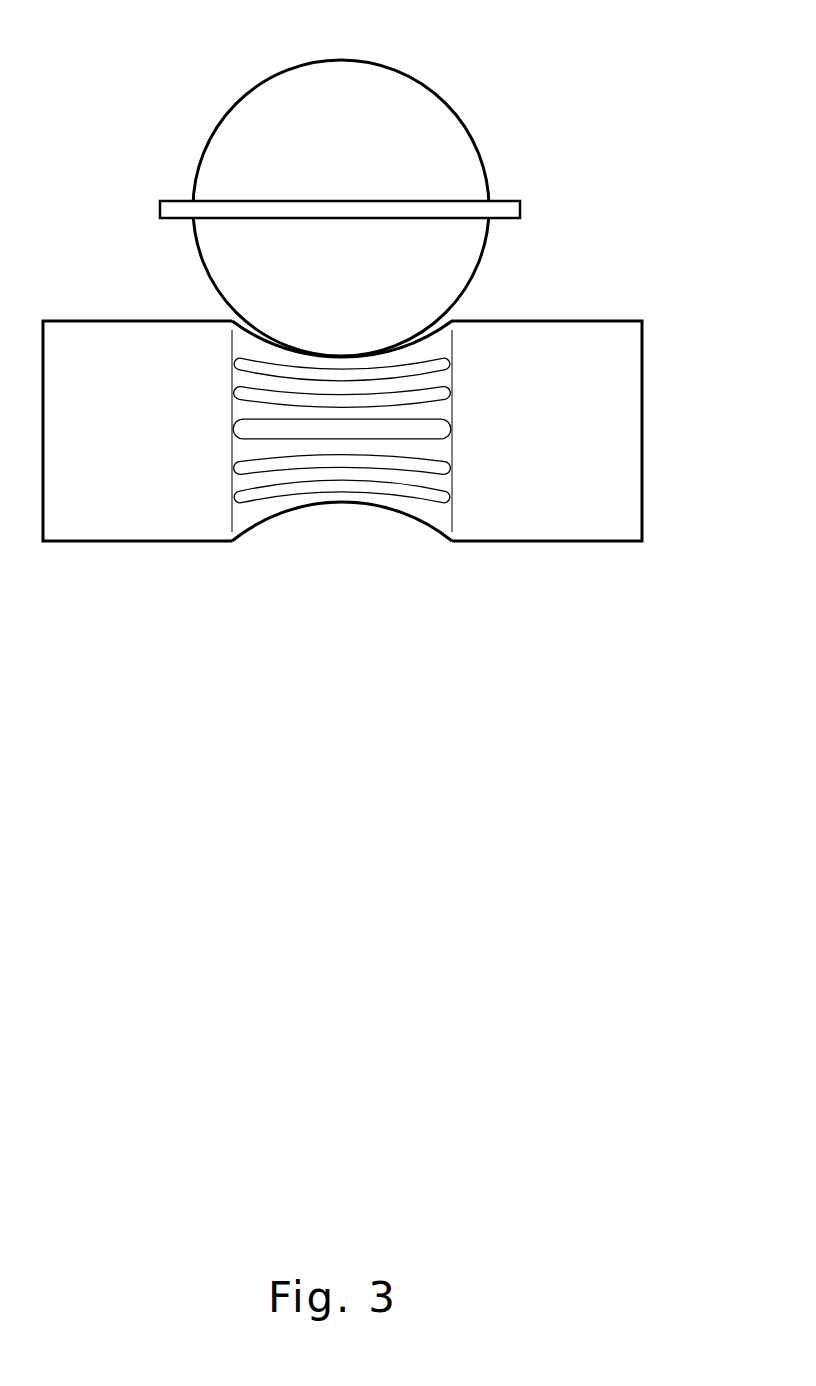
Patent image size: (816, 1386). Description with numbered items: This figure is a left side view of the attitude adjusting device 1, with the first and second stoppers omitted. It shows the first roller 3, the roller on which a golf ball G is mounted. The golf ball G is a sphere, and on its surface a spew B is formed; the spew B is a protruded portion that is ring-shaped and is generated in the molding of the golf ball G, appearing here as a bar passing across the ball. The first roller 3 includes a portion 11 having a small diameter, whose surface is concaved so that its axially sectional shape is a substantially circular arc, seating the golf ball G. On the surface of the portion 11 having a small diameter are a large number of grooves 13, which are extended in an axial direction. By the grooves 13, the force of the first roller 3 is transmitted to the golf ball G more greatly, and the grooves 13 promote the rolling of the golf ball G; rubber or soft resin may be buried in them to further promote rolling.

The attitude adjusting device 1 is at (375, 509).
The first roller 3 is at (155, 522).
The portion having a small diameter 11 is at (400, 518).
The groove 13 is at (450, 358).
The golf ball G is at (393, 124).
The spew B is at (505, 211).